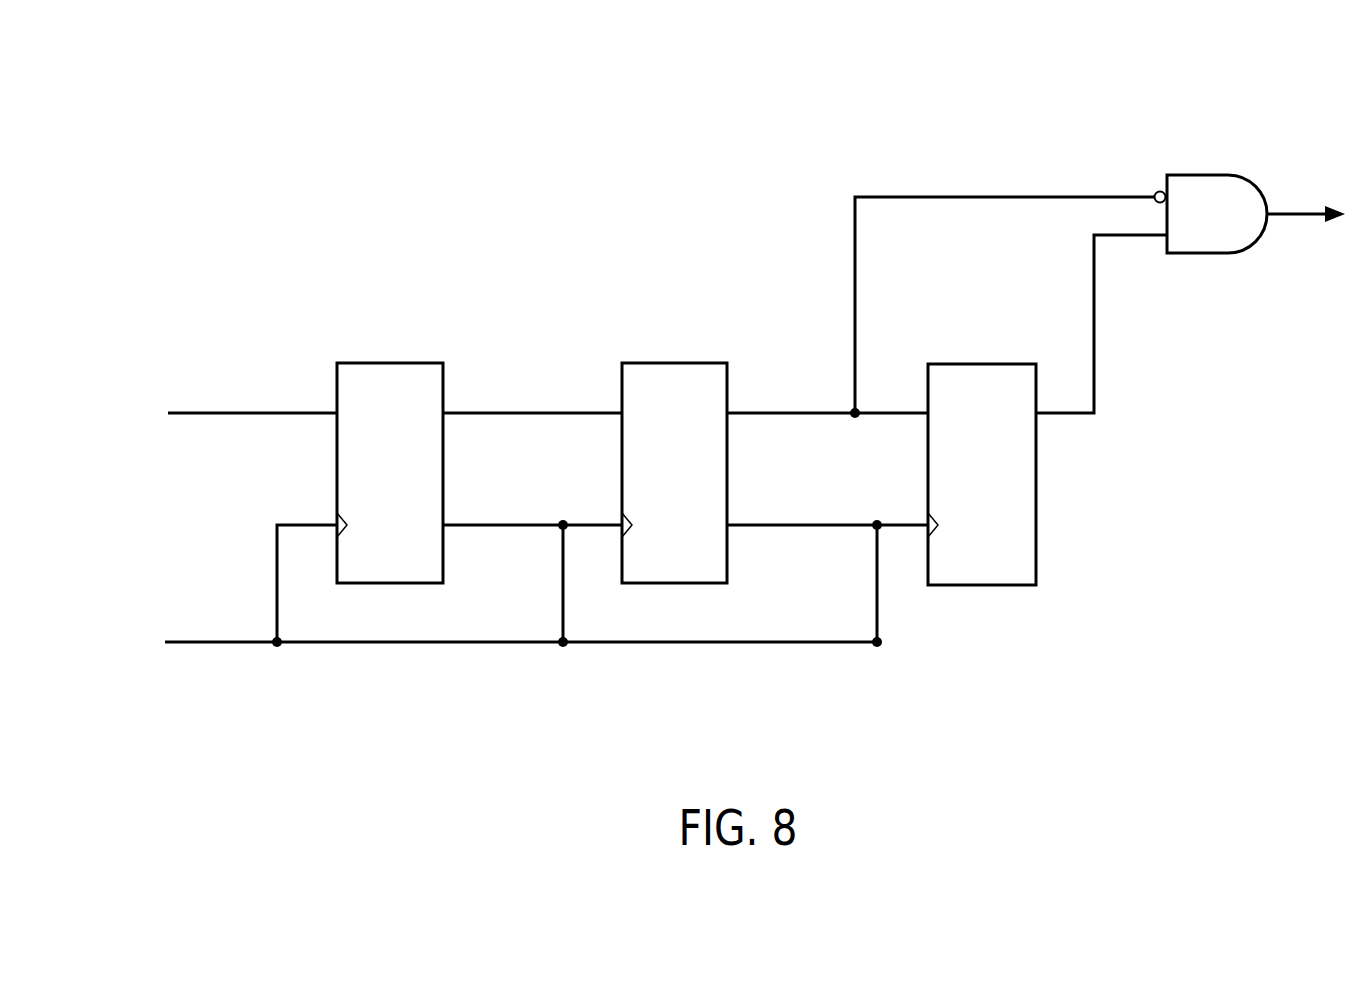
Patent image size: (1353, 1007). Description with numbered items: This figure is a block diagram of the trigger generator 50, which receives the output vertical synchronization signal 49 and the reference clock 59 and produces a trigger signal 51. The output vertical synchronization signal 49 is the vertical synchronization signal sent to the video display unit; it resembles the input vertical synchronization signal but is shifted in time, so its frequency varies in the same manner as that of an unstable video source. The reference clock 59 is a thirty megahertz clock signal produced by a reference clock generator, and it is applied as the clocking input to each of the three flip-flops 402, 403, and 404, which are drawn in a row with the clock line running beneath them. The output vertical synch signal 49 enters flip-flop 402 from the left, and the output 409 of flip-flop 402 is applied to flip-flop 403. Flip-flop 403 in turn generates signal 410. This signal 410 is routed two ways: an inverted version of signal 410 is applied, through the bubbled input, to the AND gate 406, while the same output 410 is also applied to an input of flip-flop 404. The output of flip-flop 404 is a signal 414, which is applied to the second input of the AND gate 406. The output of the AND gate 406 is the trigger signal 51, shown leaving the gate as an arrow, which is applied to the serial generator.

The trigger generator 50 is at (975, 115).
The output vertical synchronization signal 49 is at (228, 413).
The reference clock 59 is at (243, 643).
The flip-flop 402 is at (372, 563).
The flip-flop 403 is at (657, 563).
The flip-flop 404 is at (964, 567).
The AND gate 406 is at (1202, 237).
The output of flip-flop 402 409 is at (539, 413).
The output of flip-flop 403 410 is at (755, 413).
The output of flip-flop 404 414 is at (1148, 237).
The trigger signal 51 is at (1281, 210).